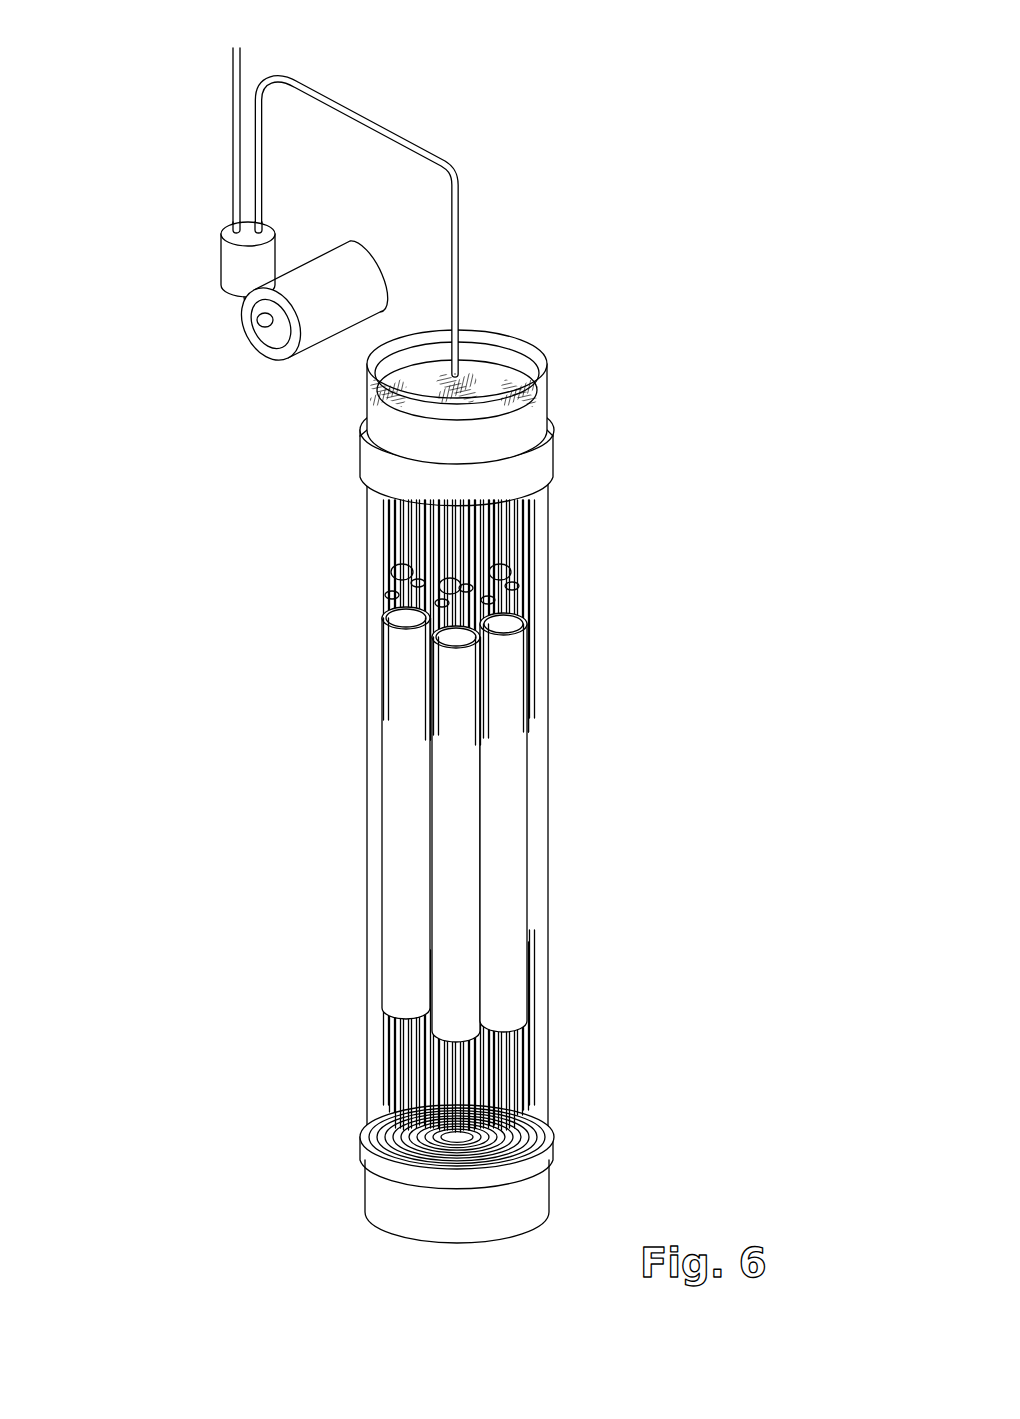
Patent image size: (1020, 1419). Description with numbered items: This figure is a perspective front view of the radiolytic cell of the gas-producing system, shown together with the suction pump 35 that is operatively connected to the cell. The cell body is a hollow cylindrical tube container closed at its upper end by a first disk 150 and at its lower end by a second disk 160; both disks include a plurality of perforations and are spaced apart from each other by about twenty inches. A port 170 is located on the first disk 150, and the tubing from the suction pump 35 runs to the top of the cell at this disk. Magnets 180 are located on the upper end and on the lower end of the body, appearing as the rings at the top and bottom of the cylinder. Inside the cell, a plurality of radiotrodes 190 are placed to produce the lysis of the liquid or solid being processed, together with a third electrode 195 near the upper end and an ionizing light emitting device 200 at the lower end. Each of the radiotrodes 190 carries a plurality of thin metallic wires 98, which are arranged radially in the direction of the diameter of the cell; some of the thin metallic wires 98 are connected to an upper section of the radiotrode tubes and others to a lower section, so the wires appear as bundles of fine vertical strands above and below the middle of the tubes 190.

The suction pump 35 is at (223, 209).
The port 170 is at (477, 243).
The first disk 150 is at (579, 396).
The third electrode 195 is at (337, 421).
The magnets 180 is at (586, 791).
The thin metallic wires 98 is at (569, 810).
The radiotrodes 190 is at (508, 885).
The ionizing light emitting device 200 is at (327, 1095).
The second disk 160 is at (346, 1217).